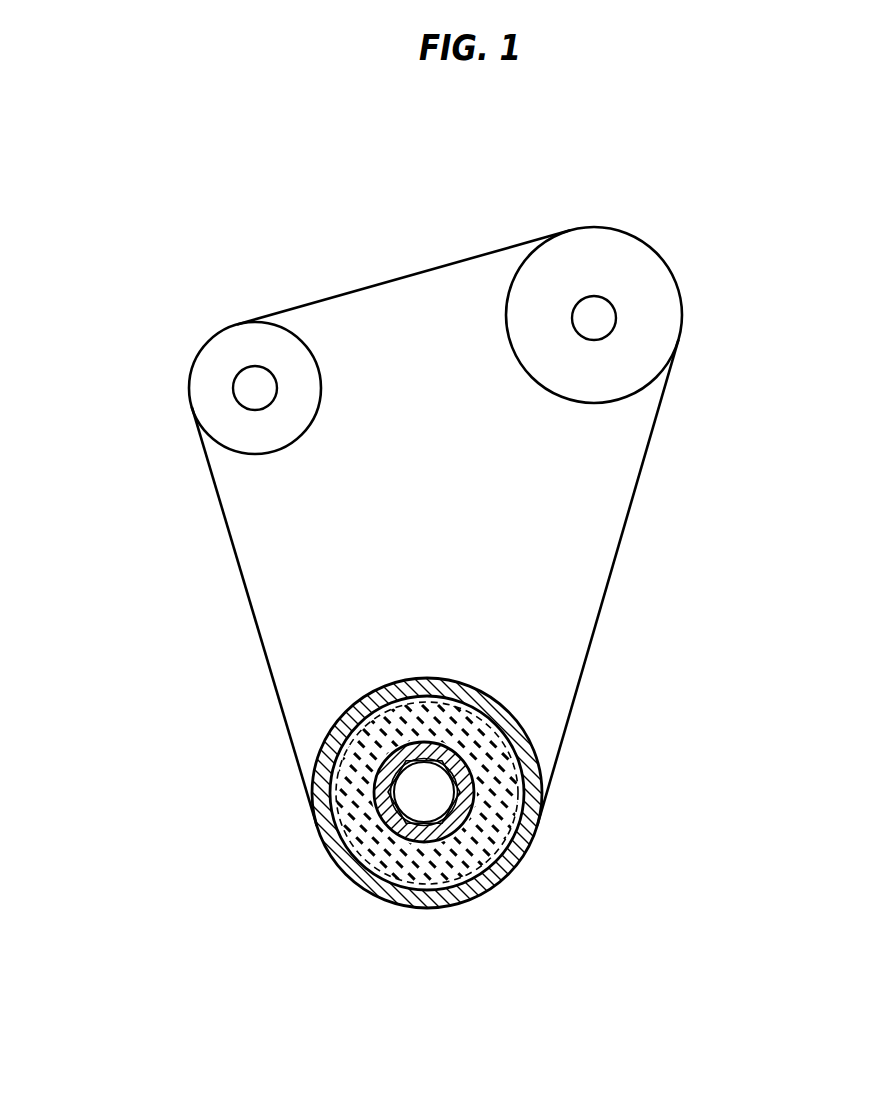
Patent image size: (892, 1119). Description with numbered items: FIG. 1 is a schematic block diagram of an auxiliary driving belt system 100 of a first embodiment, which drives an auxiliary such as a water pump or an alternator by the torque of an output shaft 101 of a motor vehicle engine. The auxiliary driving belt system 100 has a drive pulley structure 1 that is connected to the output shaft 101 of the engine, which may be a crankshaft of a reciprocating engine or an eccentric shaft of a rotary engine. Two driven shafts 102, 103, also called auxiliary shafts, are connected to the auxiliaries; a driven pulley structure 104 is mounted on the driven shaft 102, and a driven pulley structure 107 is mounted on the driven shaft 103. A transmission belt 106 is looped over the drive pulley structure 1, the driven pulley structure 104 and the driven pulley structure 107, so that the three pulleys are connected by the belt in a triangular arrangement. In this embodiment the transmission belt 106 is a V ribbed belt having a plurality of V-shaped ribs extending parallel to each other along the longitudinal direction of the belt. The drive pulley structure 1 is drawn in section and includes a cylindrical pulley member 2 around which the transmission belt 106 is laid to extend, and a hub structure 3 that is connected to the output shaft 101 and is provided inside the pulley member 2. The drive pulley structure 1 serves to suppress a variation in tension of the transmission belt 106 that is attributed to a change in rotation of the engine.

The auxiliary driving belt system 100 is at (593, 191).
The driven shaft 102 is at (617, 305).
The driven shaft 103 is at (233, 390).
The driven pulley structure 104 is at (625, 413).
The transmission belt 106 is at (617, 559).
The driven pulley structure 107 is at (318, 329).
The drive pulley structure 1 is at (427, 766).
The pulley member 2 is at (528, 738).
The hub structure 3 is at (475, 823).
The output shaft 101 is at (438, 800).